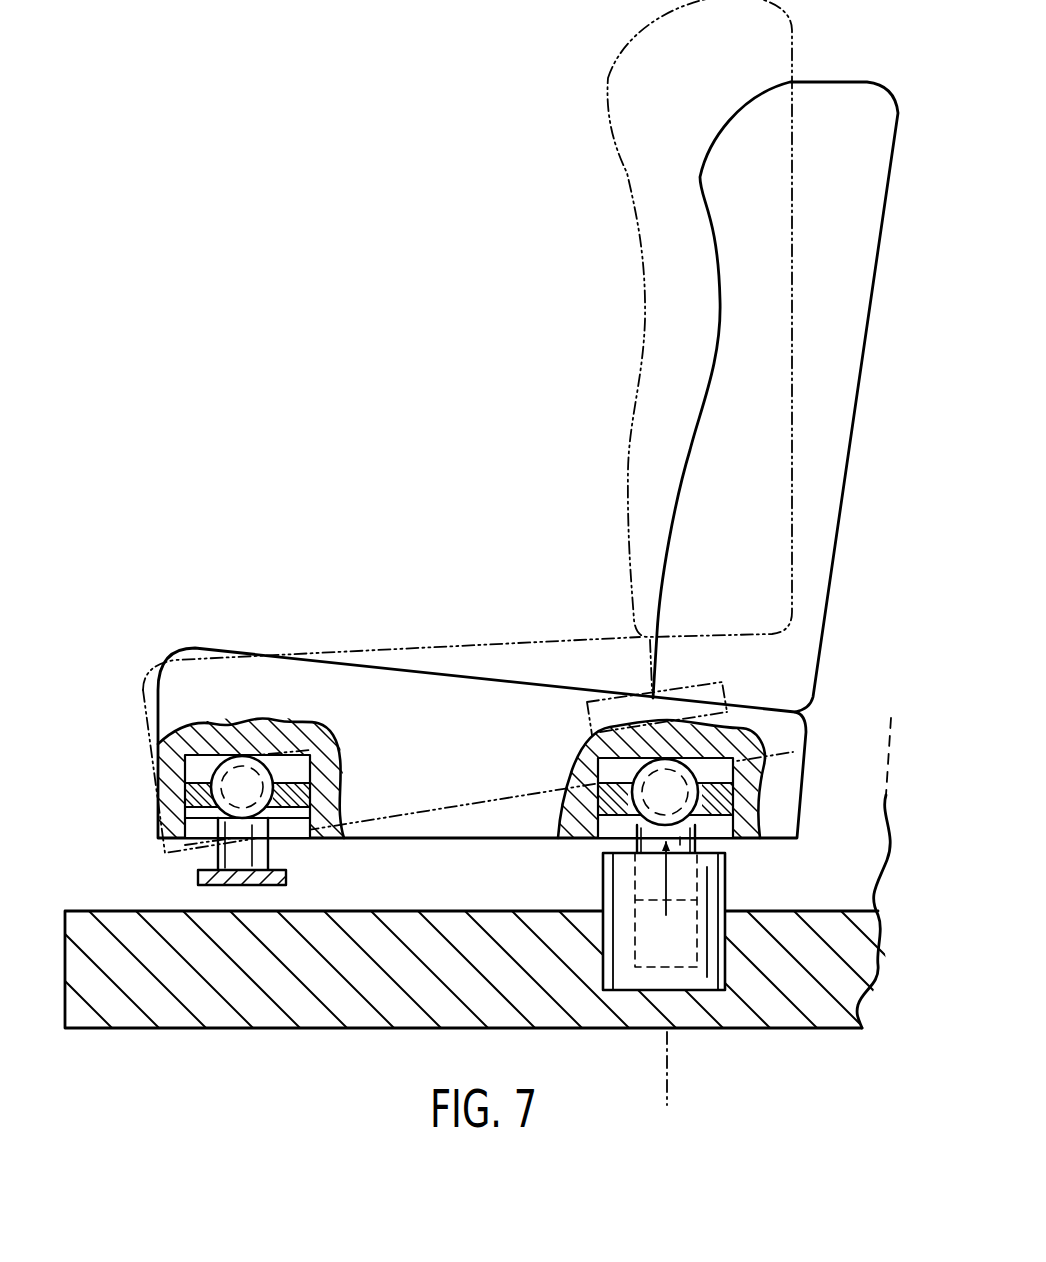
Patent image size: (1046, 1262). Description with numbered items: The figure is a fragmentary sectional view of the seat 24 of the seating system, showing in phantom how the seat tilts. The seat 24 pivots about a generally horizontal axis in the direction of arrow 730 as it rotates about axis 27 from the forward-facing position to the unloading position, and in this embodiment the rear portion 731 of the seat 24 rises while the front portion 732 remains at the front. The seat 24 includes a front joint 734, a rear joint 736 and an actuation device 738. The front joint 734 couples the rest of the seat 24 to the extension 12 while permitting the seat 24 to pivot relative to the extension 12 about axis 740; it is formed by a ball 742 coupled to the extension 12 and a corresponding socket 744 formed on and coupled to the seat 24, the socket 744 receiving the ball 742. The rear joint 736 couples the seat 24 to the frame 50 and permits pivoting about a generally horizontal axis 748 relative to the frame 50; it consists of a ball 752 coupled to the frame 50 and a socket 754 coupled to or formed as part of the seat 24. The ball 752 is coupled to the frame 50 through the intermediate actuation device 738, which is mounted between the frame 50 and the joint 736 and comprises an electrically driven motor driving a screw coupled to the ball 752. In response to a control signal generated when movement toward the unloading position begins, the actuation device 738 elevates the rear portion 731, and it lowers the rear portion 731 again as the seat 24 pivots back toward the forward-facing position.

The extension 12 is at (200, 877).
The seat 24 is at (602, 76).
The axis 27 is at (668, 1068).
The frame 50 is at (368, 909).
The arrow 730 is at (612, 273).
The rear portion 731 is at (862, 76).
The front portion 732 is at (152, 633).
The front joint 734 is at (241, 745).
The rear joint 736 is at (706, 828).
The actuation device 738 is at (645, 886).
The axis 740 is at (242, 793).
The ball 742 is at (252, 772).
The socket 744 is at (290, 790).
The axis 748 is at (665, 803).
The ball 752 is at (670, 775).
The socket 754 is at (697, 827).